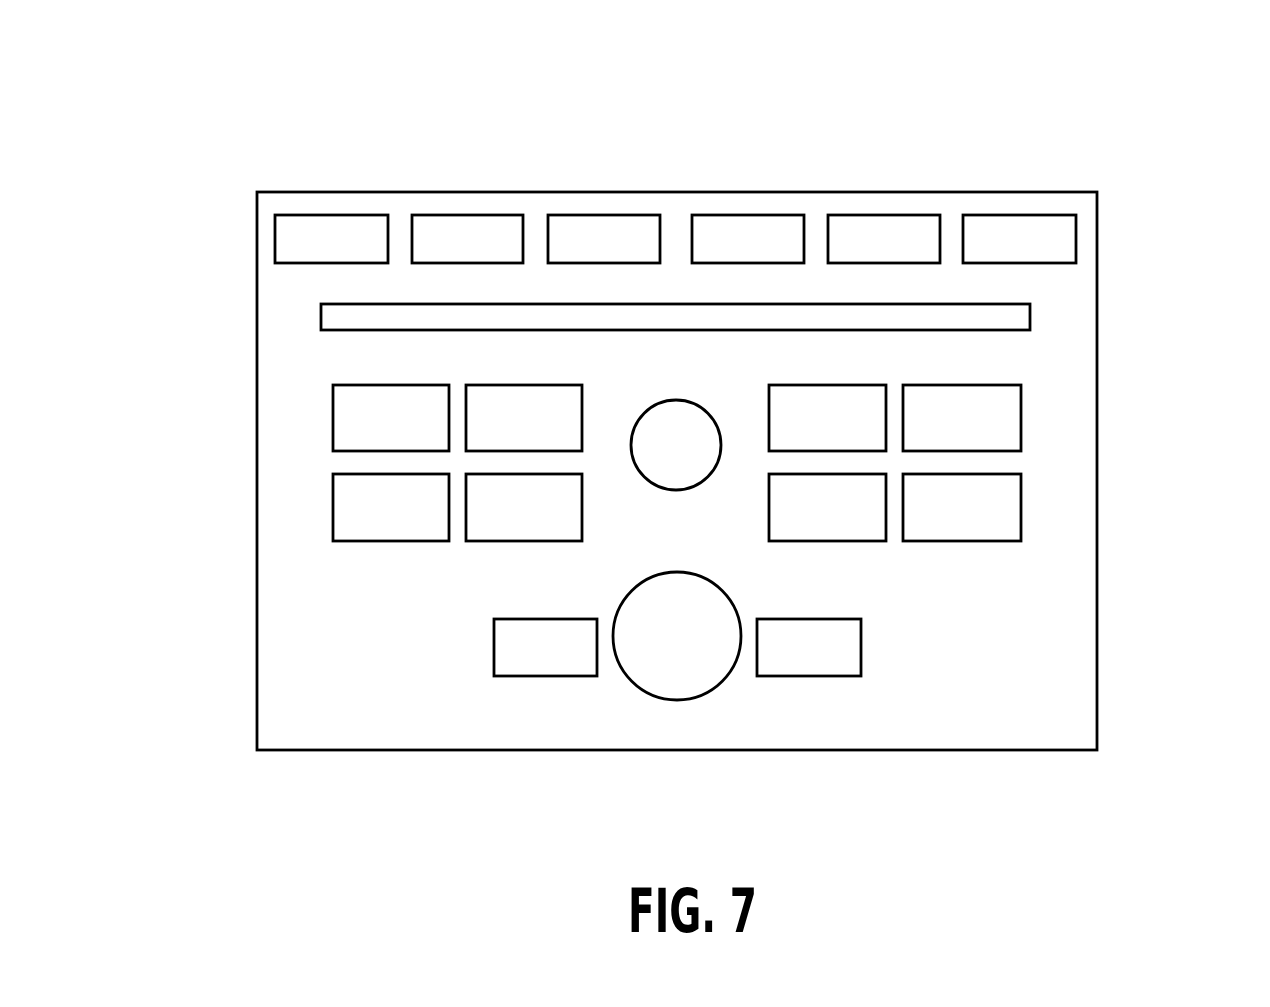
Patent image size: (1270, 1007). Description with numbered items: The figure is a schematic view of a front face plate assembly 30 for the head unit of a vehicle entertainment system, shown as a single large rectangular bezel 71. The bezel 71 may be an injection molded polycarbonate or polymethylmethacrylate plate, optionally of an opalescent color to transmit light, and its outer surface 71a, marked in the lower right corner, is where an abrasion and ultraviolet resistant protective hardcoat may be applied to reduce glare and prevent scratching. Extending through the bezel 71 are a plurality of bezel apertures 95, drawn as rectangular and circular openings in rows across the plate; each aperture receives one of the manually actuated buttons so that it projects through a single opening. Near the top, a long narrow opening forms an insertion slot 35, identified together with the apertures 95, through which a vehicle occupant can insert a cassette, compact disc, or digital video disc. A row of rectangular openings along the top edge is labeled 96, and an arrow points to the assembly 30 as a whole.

The front face plate assembly 30 is at (632, 381).
The connector components 96 is at (582, 228).
The bezel apertures 95 is at (768, 228).
The insertion slot 35 is at (1013, 313).
The bezel 71 is at (290, 620).
The outer surface 71a is at (1077, 688).